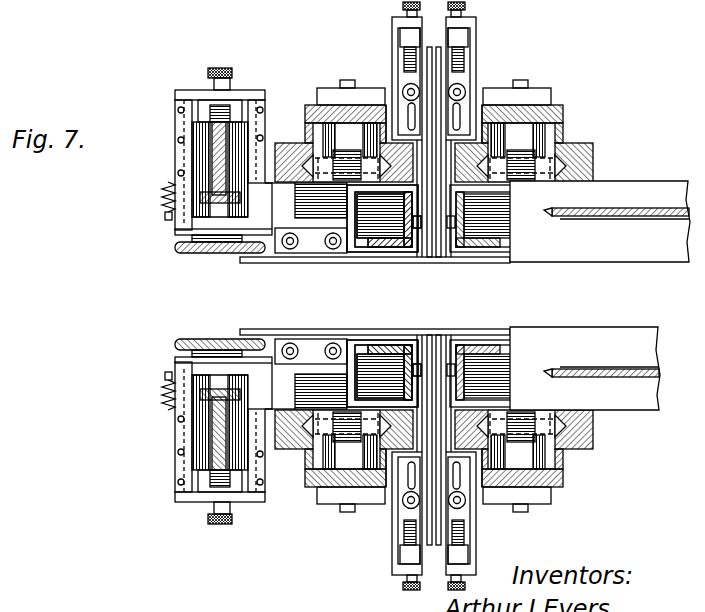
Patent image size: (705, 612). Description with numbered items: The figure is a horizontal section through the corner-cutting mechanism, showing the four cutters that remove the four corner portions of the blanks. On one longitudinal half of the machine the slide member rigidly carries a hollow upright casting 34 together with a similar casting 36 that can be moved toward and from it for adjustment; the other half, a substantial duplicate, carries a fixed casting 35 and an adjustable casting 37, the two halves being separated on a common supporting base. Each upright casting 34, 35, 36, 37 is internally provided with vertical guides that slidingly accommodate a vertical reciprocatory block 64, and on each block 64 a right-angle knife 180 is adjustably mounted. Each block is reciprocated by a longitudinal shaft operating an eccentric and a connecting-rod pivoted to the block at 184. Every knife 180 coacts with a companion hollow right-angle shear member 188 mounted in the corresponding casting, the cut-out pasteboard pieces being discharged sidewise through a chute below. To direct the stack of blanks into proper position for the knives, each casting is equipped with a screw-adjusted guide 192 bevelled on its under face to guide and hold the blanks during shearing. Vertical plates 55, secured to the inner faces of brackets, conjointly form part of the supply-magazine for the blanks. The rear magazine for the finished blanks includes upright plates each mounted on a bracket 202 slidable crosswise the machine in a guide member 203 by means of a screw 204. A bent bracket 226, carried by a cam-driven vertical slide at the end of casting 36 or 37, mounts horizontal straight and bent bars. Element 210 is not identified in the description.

The upright casting 34 is at (563, 116).
The fixed casting 35 is at (563, 482).
The adjustable casting 36 is at (305, 106).
The adjustable casting 37 is at (307, 486).
The vertical plate 55 is at (596, 214).
The vertical reciprocatory block 64 is at (318, 164).
The right-angle knife 180 is at (389, 252).
The pivot of connecting-rod to block 184 is at (540, 172).
The hollow right-angle shear member 188 is at (397, 245).
The screw-adjusted guide 192 is at (451, 224).
The bracket 202 is at (214, 150).
The guide member 203 is at (185, 98).
The screw 204 is at (226, 62).
The spring 210 is at (163, 201).
The bent bracket 226 is at (205, 254).